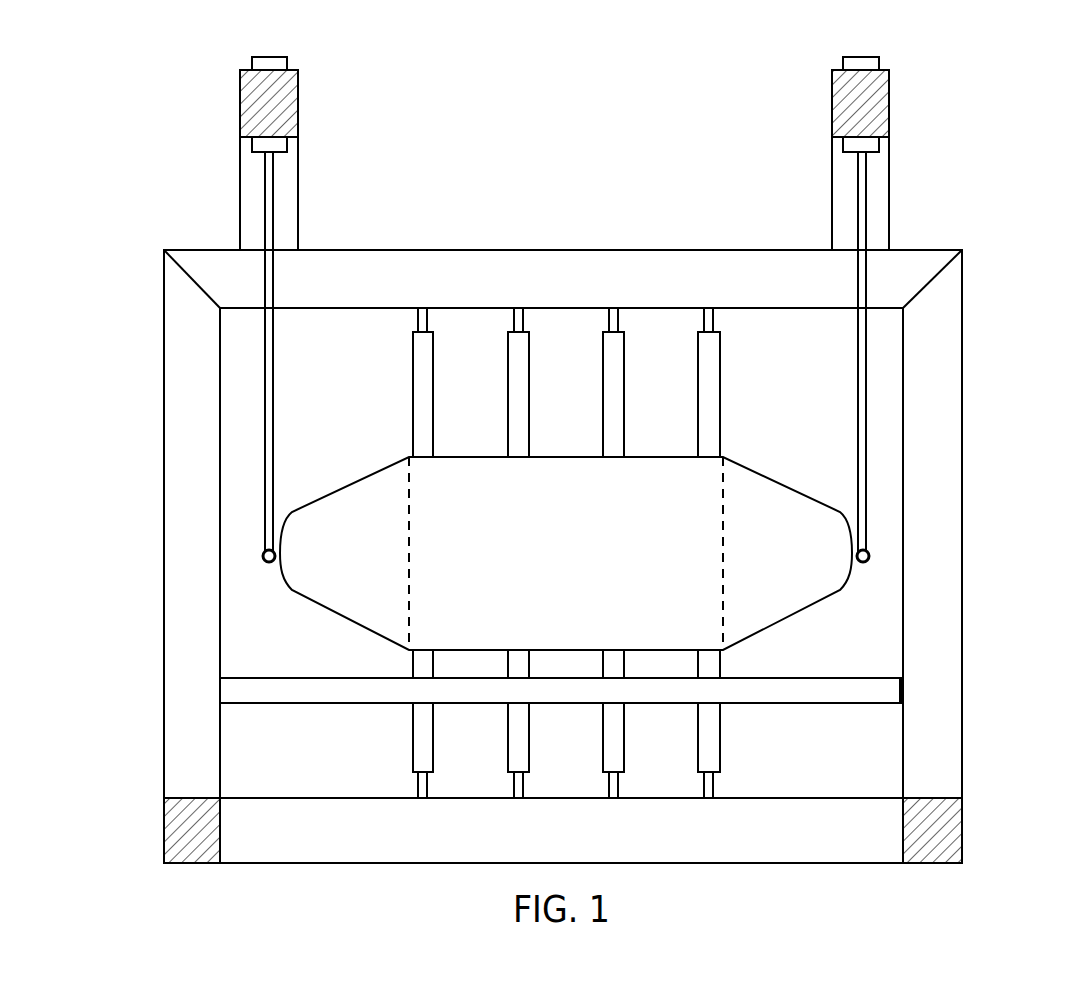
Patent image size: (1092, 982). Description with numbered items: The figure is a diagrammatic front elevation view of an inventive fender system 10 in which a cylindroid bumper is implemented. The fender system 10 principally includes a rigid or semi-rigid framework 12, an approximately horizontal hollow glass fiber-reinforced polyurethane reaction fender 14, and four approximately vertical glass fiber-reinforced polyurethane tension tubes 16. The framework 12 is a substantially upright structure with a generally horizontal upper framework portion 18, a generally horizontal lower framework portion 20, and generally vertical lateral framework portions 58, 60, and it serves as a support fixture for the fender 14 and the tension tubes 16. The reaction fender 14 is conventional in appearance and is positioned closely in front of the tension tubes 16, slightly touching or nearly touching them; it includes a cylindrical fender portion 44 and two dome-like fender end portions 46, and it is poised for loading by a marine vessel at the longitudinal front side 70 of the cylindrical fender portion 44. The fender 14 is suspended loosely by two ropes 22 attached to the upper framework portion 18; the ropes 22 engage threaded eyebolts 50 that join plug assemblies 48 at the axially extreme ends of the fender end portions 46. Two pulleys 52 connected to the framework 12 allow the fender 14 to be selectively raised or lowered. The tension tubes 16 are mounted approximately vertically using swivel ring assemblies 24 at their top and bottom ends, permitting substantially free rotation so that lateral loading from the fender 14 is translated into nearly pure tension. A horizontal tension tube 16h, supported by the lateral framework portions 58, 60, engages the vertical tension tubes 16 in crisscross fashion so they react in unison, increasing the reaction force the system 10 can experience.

The fender system 10 is at (962, 190).
The framework 12 is at (975, 333).
The reaction fender 14 is at (392, 457).
The tension tubes 16 is at (433, 722).
The horizontal tension tube 16h is at (353, 703).
The upper framework portion 18 is at (580, 250).
The lower framework portion 20 is at (698, 863).
The ropes 22 is at (275, 365).
The swivel ring assemblies 24 is at (514, 318).
The cylindrical fender portion 44 is at (557, 472).
The dome-like fender end portions 46 is at (356, 508).
The plug assemblies 48 is at (279, 571).
The threaded eyebolts 50 is at (264, 563).
The pulleys 52 is at (300, 90).
The lateral framework portion 58 is at (164, 472).
The lateral framework portion 60 is at (962, 474).
The longitudinal front side 70 is at (652, 482).